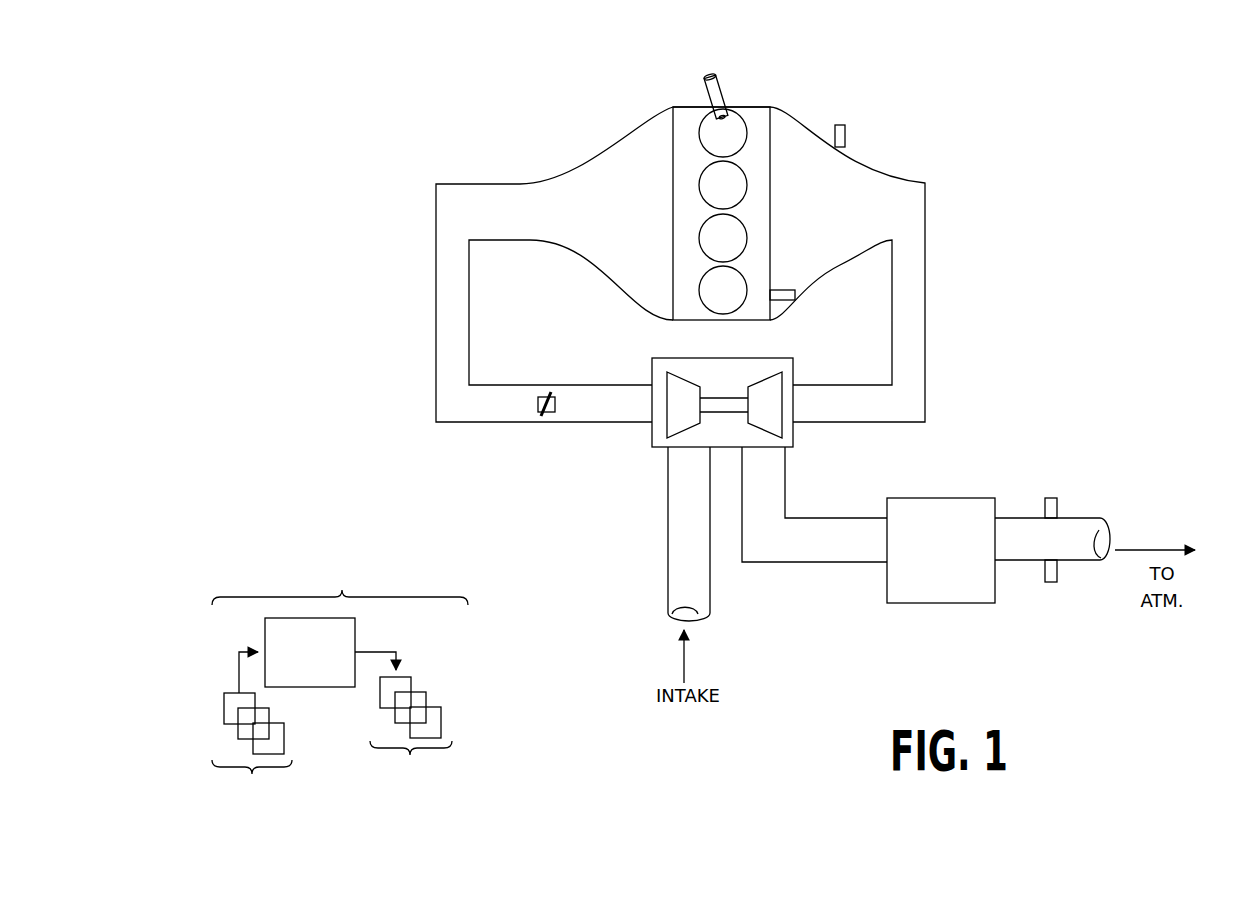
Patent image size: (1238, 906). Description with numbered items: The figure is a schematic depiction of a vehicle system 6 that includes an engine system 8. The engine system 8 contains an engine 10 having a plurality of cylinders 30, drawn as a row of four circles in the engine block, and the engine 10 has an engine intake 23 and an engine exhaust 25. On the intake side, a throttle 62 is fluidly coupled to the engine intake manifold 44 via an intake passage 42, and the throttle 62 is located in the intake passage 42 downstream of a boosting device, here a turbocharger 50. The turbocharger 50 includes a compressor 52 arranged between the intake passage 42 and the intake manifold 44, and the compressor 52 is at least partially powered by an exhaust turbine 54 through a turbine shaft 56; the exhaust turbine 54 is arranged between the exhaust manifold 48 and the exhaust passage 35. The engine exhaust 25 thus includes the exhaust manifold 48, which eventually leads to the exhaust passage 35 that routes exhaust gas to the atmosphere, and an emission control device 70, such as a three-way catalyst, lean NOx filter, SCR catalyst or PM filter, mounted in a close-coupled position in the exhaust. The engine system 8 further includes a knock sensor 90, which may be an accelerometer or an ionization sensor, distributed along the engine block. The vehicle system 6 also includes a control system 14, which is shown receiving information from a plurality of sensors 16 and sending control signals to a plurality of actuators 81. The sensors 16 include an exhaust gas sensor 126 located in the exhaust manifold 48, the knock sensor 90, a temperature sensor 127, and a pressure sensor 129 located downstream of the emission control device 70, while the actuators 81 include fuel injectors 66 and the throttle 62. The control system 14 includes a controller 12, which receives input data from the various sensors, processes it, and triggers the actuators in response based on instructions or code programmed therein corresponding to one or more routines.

The vehicle system 6 is at (182, 126).
The engine system 8 is at (938, 109).
The engine 10 is at (772, 193).
The controller 12 is at (310, 652).
The control system 14 is at (340, 682).
The sensors 16 is at (252, 735).
The engine intake 23 is at (598, 524).
The engine exhaust 25 is at (950, 317).
The cylinders 30 is at (746, 127).
The exhaust passage 35 is at (1066, 518).
The intake passage 42 is at (668, 560).
The intake manifold 44 is at (611, 217).
The exhaust manifold 48 is at (879, 220).
The turbocharger 50 is at (718, 358).
The compressor 52 is at (667, 392).
The exhaust turbine 54 is at (787, 393).
The turbine shaft 56 is at (710, 398).
The throttle 62 is at (555, 405).
The fuel injectors 66 is at (712, 74).
The emission control device 70 is at (920, 498).
The actuators 81 is at (404, 727).
The knock sensor 90 is at (796, 296).
The exhaust gas sensor 126 is at (848, 146).
The temperature sensor 127 is at (1057, 573).
The pressure sensor 129 is at (1051, 498).